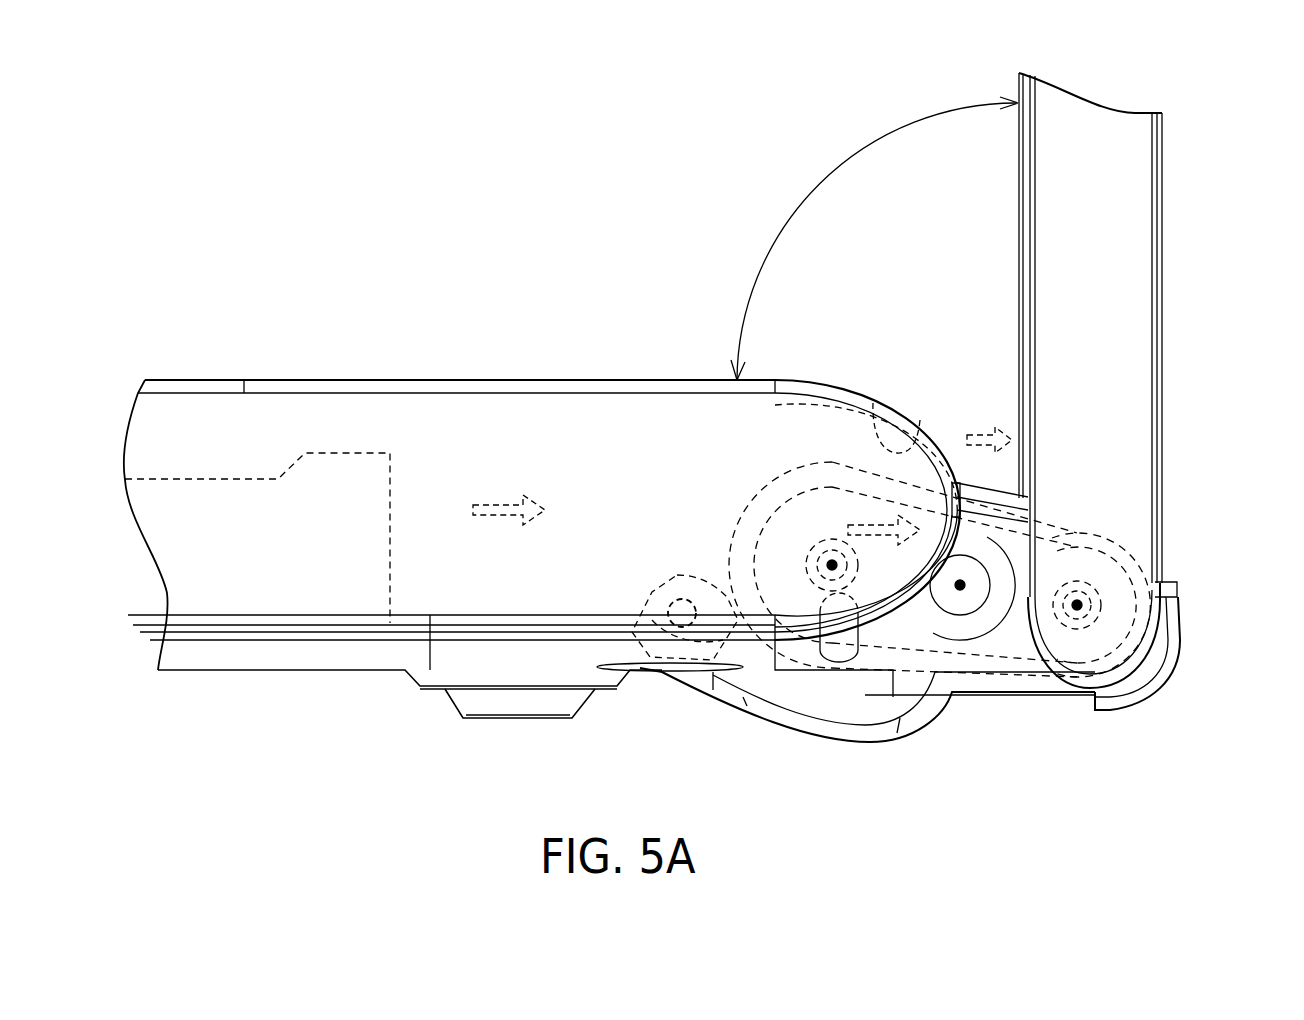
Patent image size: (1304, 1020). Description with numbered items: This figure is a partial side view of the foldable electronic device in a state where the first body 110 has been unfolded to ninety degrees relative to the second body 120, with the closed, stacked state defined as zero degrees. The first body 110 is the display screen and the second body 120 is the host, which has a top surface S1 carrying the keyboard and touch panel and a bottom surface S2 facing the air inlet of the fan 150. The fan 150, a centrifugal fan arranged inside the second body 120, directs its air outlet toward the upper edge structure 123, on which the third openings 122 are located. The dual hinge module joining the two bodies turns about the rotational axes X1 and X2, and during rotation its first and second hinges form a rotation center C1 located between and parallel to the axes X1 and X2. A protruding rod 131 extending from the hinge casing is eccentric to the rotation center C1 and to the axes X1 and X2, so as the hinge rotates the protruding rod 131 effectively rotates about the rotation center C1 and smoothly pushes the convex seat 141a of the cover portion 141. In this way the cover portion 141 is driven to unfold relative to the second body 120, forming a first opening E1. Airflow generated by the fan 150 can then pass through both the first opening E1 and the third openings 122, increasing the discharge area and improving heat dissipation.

The top surface S1 is at (195, 366).
The bottom surface S2 is at (212, 670).
The first body 110 is at (1105, 182).
The second body 120 is at (353, 653).
The third openings 122 is at (947, 437).
The upper edge structure 123 is at (878, 410).
The protruding rod 131 is at (838, 648).
The cover portion 141 is at (873, 742).
The convex seat 141a is at (782, 688).
The fan 150 is at (263, 553).
The rotational axis X1 is at (1080, 603).
The rotational axis X2 is at (830, 563).
The rotation center C1 is at (963, 583).
The first opening E1 is at (985, 490).